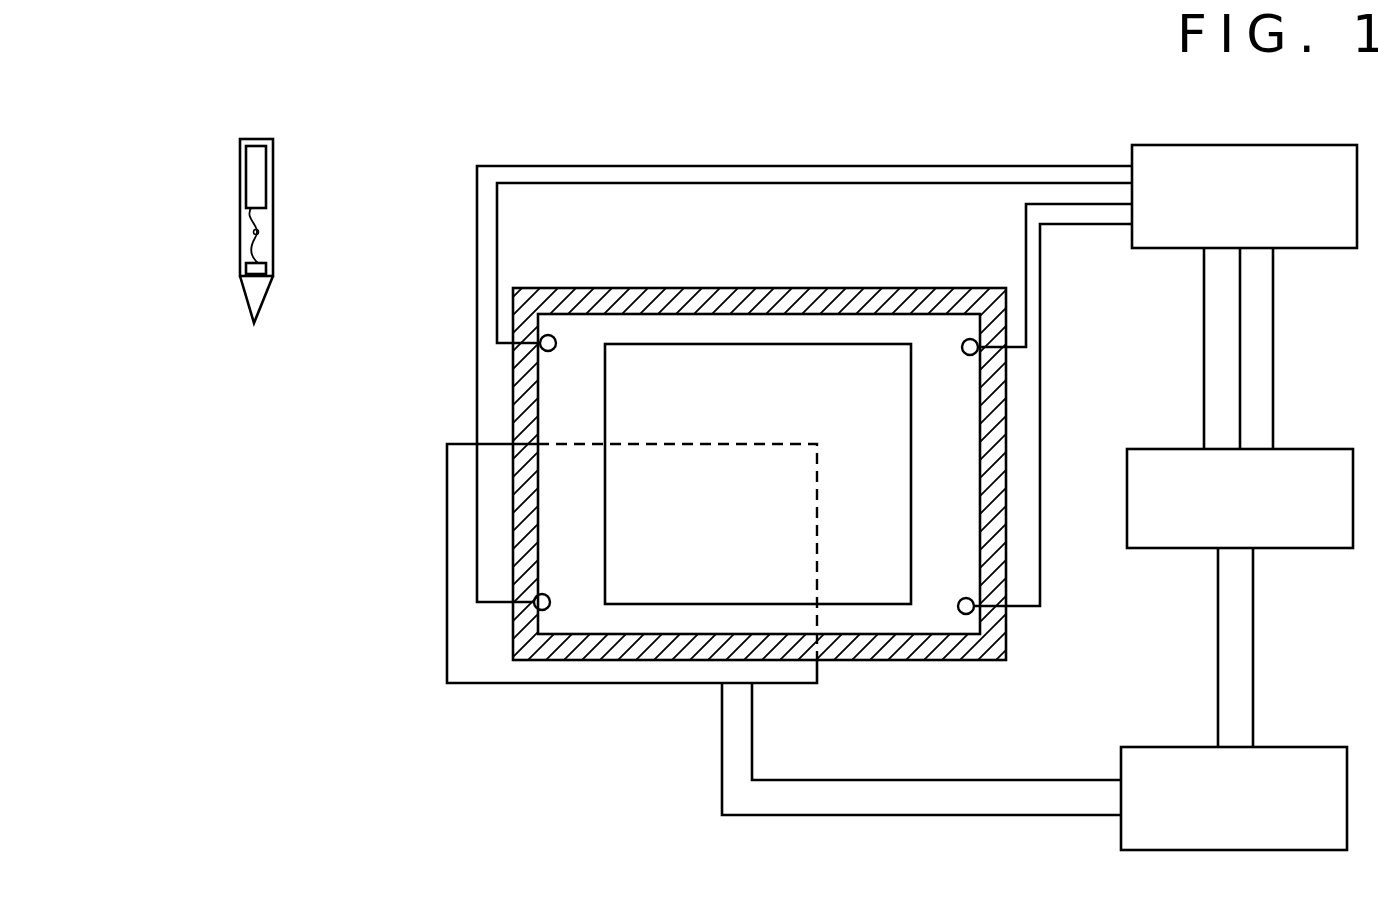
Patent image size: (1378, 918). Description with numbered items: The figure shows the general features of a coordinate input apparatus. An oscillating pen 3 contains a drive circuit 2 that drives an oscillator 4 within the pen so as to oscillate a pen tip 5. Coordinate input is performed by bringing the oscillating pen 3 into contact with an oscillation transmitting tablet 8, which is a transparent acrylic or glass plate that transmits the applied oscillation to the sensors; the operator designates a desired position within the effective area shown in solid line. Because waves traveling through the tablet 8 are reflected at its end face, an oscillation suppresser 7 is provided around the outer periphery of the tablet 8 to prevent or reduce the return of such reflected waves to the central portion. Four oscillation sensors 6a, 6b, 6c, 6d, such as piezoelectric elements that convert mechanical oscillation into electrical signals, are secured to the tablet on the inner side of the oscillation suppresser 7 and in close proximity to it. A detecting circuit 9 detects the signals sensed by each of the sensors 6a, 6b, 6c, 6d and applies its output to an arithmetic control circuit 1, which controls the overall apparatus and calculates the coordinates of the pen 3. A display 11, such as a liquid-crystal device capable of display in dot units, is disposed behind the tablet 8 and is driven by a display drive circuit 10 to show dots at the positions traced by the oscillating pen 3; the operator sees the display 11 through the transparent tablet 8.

The arithmetic control circuit 1 is at (1317, 449).
The drive circuit 2 is at (272, 163).
The oscillating pen 3 is at (241, 176).
The oscillator 4 is at (264, 266).
The pen tip 5 is at (258, 300).
The oscillation sensor 6a is at (555, 337).
The oscillation sensor 6b is at (546, 596).
The oscillation sensor 6c is at (961, 599).
The oscillation sensor 6d is at (965, 355).
The oscillation suppresser 7 is at (797, 288).
The oscillation transmitting tablet 8 is at (853, 590).
The detecting circuit 9 is at (1313, 146).
The display drive circuit 10 is at (1305, 747).
The display 11 is at (473, 683).